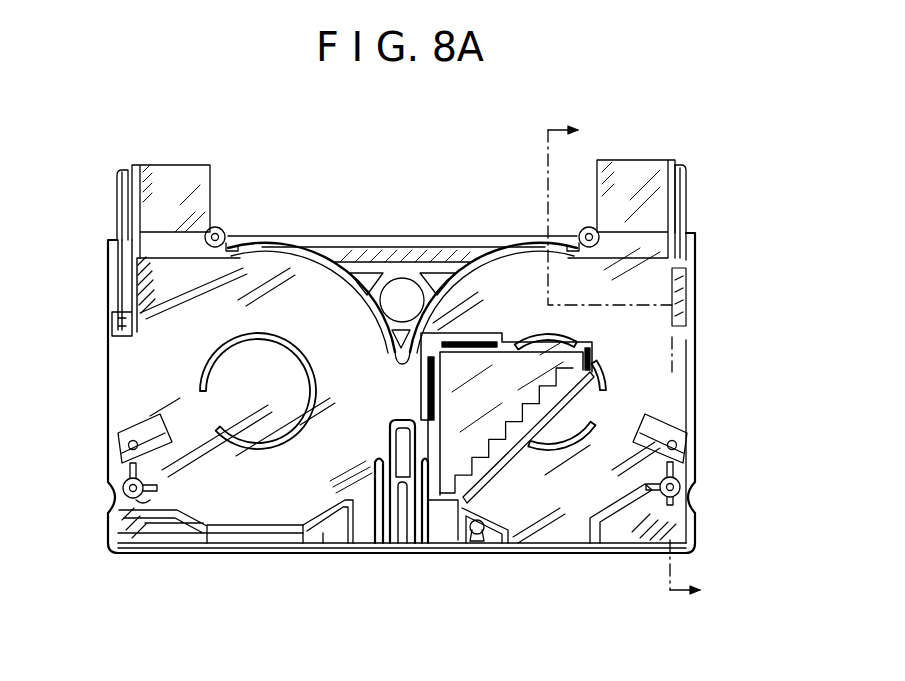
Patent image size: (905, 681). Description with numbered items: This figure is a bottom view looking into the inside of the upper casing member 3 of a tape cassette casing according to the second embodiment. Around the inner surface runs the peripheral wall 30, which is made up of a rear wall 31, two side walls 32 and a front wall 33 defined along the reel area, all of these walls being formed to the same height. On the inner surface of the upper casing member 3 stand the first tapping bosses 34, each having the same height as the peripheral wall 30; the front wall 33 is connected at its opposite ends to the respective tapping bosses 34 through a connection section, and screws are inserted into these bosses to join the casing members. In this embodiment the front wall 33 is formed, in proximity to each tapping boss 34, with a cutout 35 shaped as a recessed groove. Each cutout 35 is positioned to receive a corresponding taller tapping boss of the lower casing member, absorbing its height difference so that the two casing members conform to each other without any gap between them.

The upper casing member 3 is at (402, 376).
The peripheral wall 30 is at (322, 553).
The rear wall 31 is at (557, 553).
The side walls 32 is at (108, 377).
The front wall 33 is at (321, 252).
The first tapping bosses 34 is at (216, 229).
The cutouts 35 is at (232, 240).